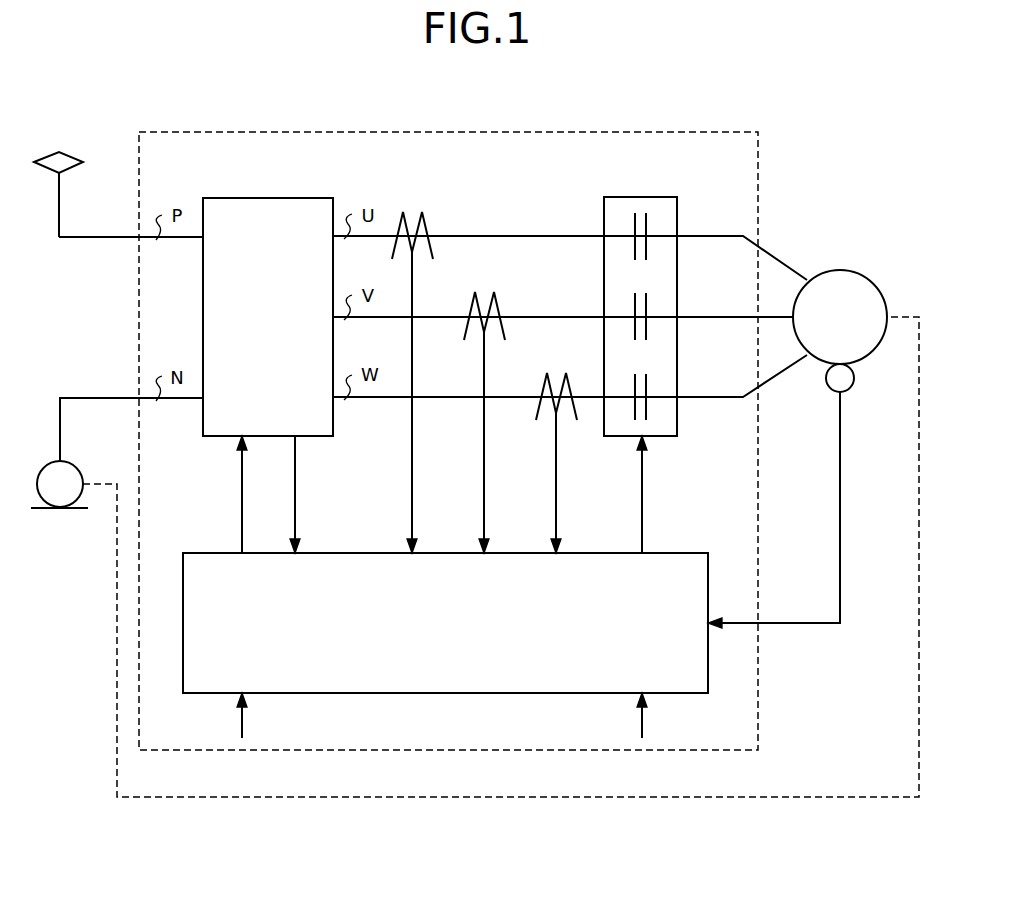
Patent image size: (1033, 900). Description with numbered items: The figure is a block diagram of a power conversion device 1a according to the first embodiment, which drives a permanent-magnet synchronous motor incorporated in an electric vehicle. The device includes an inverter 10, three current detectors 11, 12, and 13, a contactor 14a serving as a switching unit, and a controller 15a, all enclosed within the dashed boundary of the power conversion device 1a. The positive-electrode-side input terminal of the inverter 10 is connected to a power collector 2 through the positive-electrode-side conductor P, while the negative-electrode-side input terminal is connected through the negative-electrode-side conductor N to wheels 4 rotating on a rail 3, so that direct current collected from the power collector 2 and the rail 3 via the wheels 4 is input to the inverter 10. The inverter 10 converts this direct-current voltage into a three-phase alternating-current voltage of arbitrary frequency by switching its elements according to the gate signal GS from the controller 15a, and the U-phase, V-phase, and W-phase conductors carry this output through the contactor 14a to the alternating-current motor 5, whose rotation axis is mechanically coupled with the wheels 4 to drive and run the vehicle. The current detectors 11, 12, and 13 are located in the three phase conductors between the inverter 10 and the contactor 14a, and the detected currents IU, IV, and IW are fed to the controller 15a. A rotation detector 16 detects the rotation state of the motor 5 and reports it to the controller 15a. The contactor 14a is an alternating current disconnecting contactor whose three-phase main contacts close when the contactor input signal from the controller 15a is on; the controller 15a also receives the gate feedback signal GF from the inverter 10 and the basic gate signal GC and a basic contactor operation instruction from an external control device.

The power conversion device 1a is at (655, 132).
The power collector 2 is at (70, 150).
The rail 3 is at (78, 510).
The wheels 4 is at (78, 467).
The alternating-current motor 5 is at (845, 270).
The inverter 10 is at (300, 198).
The current detector 11 is at (409, 212).
The current detector 12 is at (481, 292).
The current detector 13 is at (553, 373).
The contactor 14a is at (655, 197).
The controller 15a is at (688, 553).
The rotation detector 16 is at (826, 380).